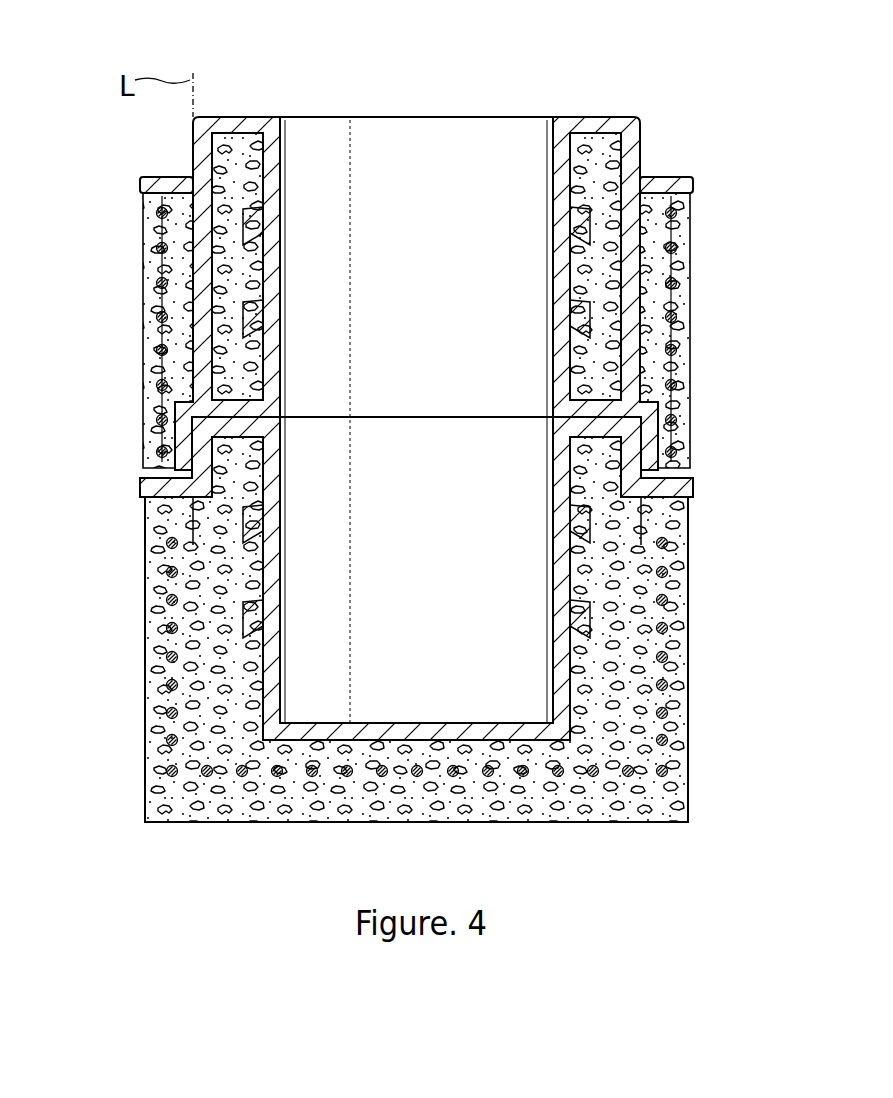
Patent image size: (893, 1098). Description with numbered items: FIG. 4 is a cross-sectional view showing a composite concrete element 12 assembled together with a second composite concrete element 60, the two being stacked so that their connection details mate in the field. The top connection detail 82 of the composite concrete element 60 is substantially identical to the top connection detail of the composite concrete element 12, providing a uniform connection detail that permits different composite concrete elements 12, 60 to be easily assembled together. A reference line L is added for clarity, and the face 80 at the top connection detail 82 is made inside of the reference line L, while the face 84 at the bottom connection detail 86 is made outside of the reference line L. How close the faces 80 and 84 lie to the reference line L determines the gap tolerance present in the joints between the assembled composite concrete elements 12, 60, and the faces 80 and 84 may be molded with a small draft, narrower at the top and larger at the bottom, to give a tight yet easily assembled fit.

The composite concrete element 12 is at (689, 313).
The composite concrete element 60 is at (688, 630).
The face 80 is at (193, 146).
The top connection detail 82 is at (243, 92).
The face 84 is at (198, 443).
The bottom connection detail 86 is at (128, 434).